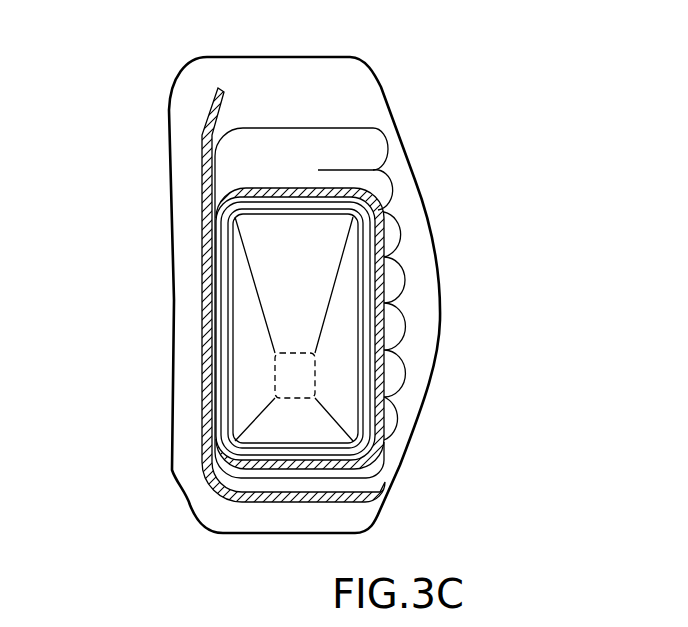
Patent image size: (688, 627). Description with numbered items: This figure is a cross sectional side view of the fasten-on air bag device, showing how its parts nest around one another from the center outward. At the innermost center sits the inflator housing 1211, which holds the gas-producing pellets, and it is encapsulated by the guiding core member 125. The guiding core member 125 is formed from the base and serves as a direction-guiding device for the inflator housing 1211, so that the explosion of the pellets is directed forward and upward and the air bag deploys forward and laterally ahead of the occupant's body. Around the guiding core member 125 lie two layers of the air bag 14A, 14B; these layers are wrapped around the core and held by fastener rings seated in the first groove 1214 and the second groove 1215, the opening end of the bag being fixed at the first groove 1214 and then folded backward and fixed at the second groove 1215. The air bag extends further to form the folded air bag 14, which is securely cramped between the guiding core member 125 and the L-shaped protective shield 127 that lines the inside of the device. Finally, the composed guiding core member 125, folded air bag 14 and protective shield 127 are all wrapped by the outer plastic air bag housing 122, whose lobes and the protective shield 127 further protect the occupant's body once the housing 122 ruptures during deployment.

The plastic air bag housing 122 is at (382, 87).
The folded air bag 14 is at (387, 140).
The first layer of the air bag 14A is at (377, 204).
The second layer of the air bag 14B is at (373, 210).
The protective shield 127 is at (385, 243).
The second groove 1215 is at (370, 281).
The first groove 1214 is at (352, 327).
The guiding core member 125 is at (340, 360).
The inflator housing 1211 is at (308, 387).